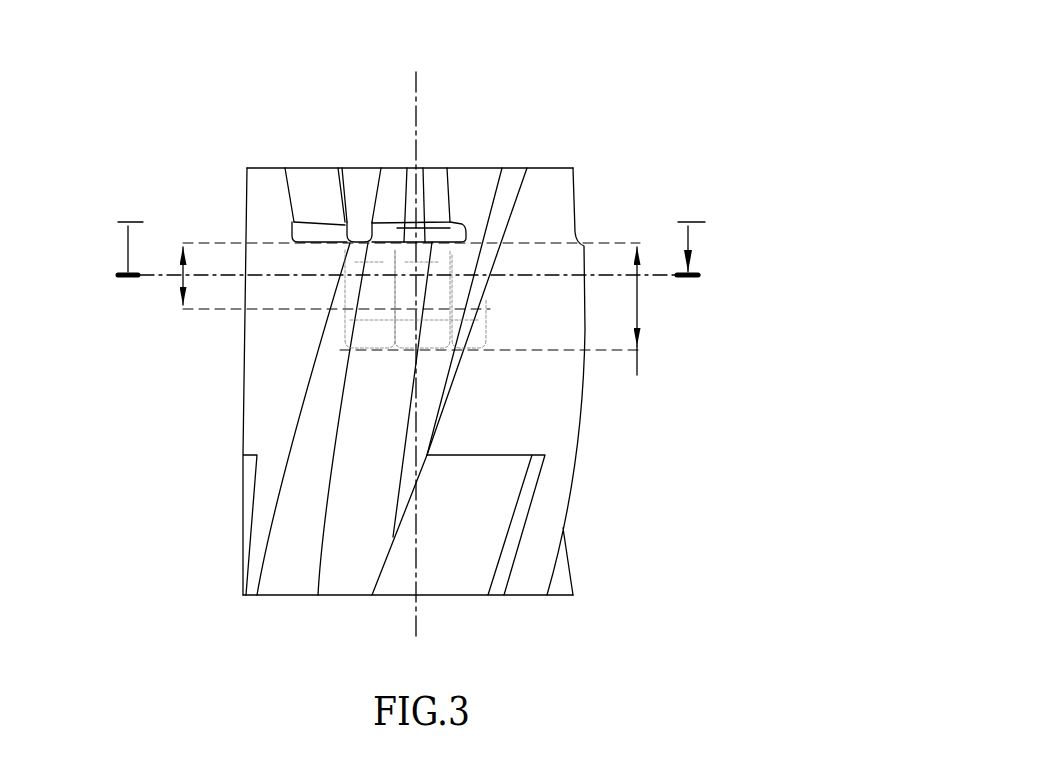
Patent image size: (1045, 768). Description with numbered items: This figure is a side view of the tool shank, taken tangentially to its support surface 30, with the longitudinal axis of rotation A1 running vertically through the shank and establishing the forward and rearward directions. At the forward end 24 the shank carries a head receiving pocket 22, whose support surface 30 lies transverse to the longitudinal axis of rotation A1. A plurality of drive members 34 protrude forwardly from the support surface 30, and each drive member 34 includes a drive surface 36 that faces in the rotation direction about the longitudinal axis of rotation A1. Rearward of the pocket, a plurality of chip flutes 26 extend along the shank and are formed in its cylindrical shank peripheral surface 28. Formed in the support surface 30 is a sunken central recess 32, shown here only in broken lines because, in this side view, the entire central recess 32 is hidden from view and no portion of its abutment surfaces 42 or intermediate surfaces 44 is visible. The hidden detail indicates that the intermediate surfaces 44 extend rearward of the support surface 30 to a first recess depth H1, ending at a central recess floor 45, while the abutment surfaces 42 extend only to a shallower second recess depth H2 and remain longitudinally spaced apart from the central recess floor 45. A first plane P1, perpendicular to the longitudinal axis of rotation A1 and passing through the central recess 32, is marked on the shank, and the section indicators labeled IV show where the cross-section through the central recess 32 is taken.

The head receiving pocket 22 is at (403, 228).
The forward end 24 is at (359, 222).
The chip flutes 26 is at (357, 465).
The cylindrical shank peripheral surface 28 is at (540, 360).
The support surface 30 is at (425, 228).
The central recess 32 is at (357, 293).
The drive members 34 is at (267, 203).
The drive surface 36 is at (313, 193).
The abutment surface 42 is at (407, 297).
The intermediate surface 44 is at (485, 312).
The central recess floor 45 is at (393, 348).
The longitudinal axis of rotation A1 is at (420, 358).
The first plane P1 is at (410, 275).
The section IV is at (413, 233).
The first recess depth H1 is at (637, 326).
The second recess depth H2 is at (185, 302).